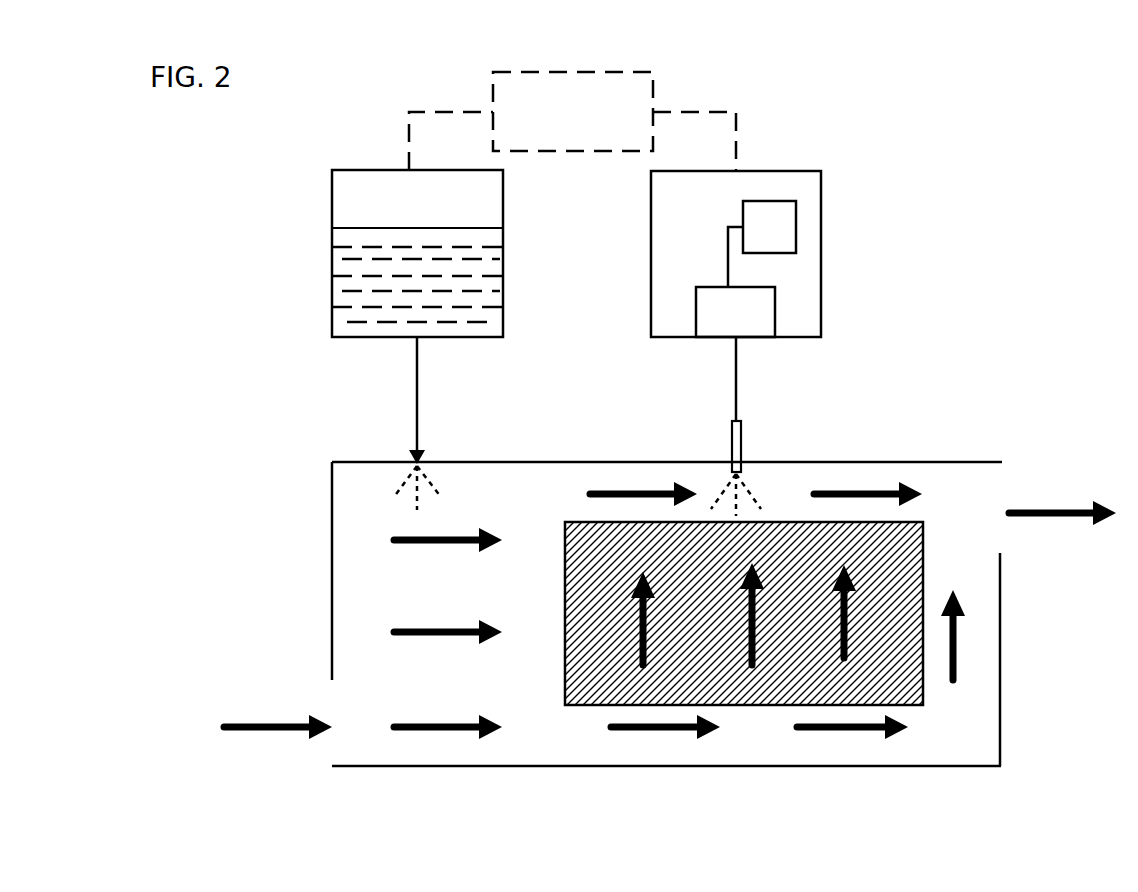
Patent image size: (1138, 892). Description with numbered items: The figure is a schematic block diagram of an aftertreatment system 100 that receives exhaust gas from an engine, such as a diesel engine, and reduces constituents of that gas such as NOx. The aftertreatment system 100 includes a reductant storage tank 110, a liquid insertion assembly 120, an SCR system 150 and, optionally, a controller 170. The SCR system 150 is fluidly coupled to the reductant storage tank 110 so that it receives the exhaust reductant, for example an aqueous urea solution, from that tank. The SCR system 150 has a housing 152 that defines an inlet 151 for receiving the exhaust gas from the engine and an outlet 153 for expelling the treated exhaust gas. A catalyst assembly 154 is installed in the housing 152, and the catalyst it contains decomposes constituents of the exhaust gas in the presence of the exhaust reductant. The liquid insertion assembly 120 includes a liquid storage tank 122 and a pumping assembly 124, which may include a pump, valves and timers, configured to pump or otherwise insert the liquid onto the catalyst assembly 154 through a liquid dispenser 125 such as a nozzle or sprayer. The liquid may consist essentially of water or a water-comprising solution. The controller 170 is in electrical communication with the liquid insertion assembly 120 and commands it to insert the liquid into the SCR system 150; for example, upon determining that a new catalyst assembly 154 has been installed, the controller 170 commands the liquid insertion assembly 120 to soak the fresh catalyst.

The aftertreatment system 100 is at (996, 146).
The reductant storage tank 110 is at (503, 212).
The liquid insertion assembly 120 is at (774, 254).
The liquid storage tank 122 is at (783, 237).
The pumping assembly 124 is at (770, 302).
The liquid dispenser 125 is at (741, 432).
The SCR system 150 is at (670, 601).
The inlet 151 is at (332, 750).
The housing 152 is at (599, 462).
The outlet 153 is at (1001, 540).
The catalyst assembly 154 is at (731, 696).
The controller 170 is at (572, 121).